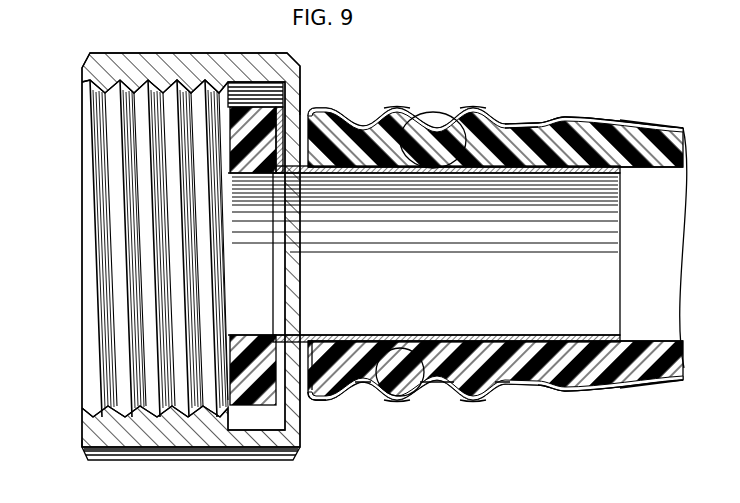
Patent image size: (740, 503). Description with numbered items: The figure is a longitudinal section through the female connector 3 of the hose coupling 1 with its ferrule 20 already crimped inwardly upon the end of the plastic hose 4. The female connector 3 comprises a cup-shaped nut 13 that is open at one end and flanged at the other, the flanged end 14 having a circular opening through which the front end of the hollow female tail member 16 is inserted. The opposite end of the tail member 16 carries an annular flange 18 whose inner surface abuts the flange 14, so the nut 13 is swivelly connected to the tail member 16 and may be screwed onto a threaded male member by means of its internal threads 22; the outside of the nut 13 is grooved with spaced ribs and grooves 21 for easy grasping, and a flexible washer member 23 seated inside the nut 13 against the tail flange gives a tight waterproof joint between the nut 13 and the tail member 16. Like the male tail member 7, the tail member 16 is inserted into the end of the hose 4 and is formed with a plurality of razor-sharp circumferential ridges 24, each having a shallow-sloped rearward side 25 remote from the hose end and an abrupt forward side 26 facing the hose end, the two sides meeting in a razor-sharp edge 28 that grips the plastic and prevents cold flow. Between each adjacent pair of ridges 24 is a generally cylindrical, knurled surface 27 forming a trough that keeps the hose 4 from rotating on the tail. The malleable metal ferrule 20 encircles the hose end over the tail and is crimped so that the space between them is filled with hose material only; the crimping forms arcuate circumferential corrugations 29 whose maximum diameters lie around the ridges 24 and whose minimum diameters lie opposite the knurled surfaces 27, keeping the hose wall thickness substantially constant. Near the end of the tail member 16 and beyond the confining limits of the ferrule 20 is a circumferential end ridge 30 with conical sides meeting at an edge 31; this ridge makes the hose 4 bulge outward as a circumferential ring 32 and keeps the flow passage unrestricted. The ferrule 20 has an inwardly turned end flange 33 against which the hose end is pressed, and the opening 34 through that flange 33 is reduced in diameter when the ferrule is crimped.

The hose coupling 1 is at (72, 431).
The female connector 3 is at (199, 258).
The hose 4 is at (628, 122).
The tail member 7 is at (520, 154).
The nut 13 is at (234, 80).
The flanged end 14 is at (278, 105).
The female tail member 16 is at (612, 276).
The annular flange 18 is at (303, 102).
The ferrule 20 is at (536, 121).
The grooving 21 is at (170, 461).
The internal threads 22 is at (105, 108).
The flexible washer member 23 is at (256, 406).
The circumferential ridges 24 is at (466, 172).
The rearward side 25 is at (430, 386).
The forward side 26 is at (368, 383).
The cylindrical surface 27 is at (360, 344).
The razor-sharp edge 28 is at (455, 152).
The corrugations 29 is at (398, 109).
The circumferential end ridge 30 is at (582, 128).
The edge 31 is at (566, 150).
The circumferential bulge 32 is at (572, 393).
The inwardly turned flange 33 is at (332, 401).
The opening 34 is at (320, 344).